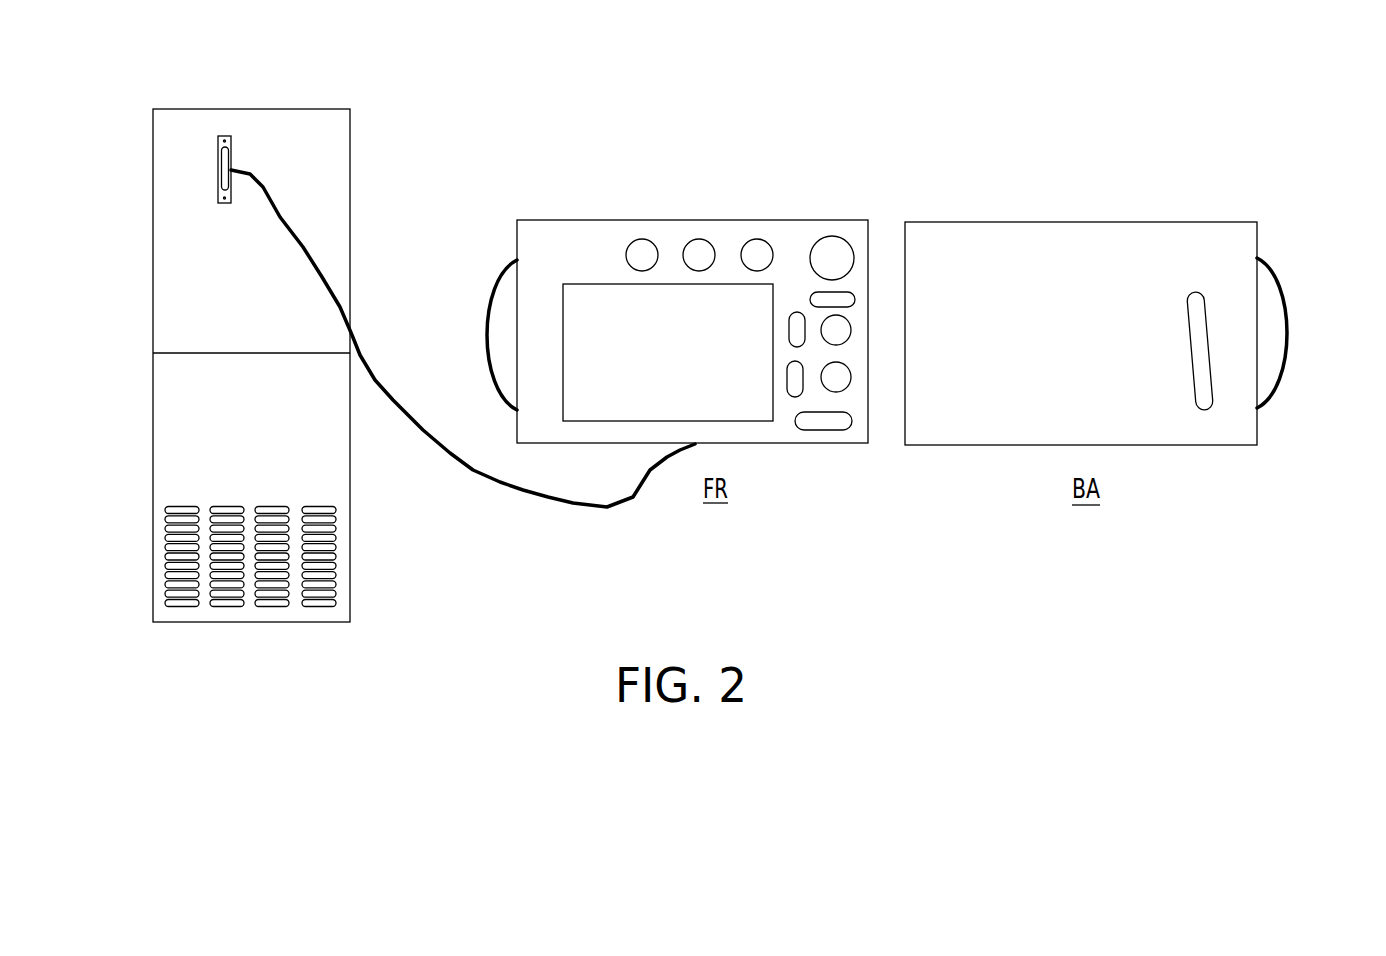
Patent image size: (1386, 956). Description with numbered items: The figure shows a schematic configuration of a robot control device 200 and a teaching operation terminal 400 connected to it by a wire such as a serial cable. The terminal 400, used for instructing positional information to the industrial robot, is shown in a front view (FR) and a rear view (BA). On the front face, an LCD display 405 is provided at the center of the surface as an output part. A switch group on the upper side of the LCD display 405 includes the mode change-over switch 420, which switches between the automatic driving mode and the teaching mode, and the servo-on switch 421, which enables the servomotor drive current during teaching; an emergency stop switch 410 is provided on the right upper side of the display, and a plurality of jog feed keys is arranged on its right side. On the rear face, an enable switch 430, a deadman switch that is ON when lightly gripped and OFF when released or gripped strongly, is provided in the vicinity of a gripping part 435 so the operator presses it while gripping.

The robot control device 200 is at (271, 132).
The teaching operation terminal 400 is at (631, 242).
The LCD display 405 is at (693, 341).
The emergency stop switch 410 is at (838, 244).
The mode change-over switch 420 is at (760, 240).
The servo-on switch 421 is at (700, 239).
The enable switch 430 is at (1189, 362).
The gripping part 435 is at (486, 277).